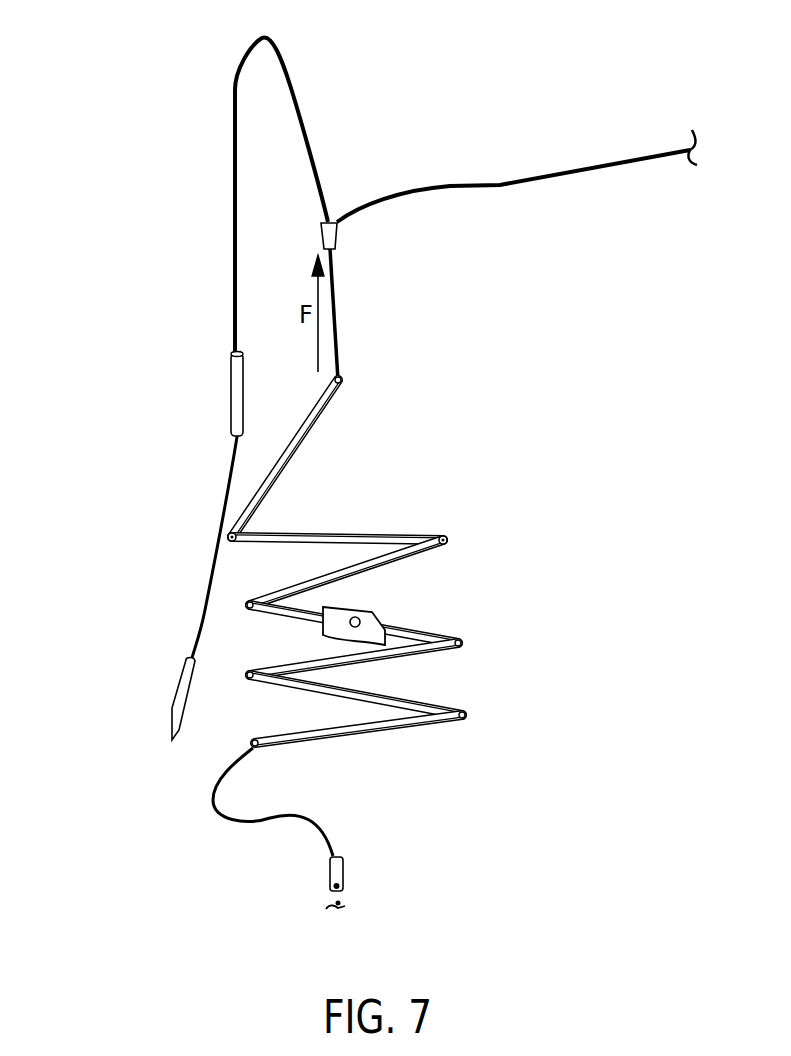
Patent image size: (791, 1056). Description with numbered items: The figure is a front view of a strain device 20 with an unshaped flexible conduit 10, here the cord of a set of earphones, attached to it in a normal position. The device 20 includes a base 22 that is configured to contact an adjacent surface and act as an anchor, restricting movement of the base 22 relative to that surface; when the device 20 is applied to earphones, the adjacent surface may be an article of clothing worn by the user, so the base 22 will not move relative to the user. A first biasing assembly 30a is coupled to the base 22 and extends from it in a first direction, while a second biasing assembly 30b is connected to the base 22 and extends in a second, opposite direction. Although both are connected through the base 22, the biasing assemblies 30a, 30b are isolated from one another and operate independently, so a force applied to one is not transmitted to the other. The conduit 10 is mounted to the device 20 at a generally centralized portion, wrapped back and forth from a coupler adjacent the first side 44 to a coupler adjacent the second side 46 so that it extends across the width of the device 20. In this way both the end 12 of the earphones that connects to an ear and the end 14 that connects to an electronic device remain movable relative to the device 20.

The flexible conduit 10 is at (355, 165).
The end of the earphones configured to connect to an ear 12 is at (338, 232).
The end of the earphones configured to connect to an electronic device 14 is at (330, 840).
The strain device 20 is at (148, 400).
The base 22 is at (362, 622).
The first biasing assembly 30a is at (392, 472).
The second biasing assembly 30b is at (475, 682).
The first side 44 is at (450, 540).
The second side 46 is at (232, 540).